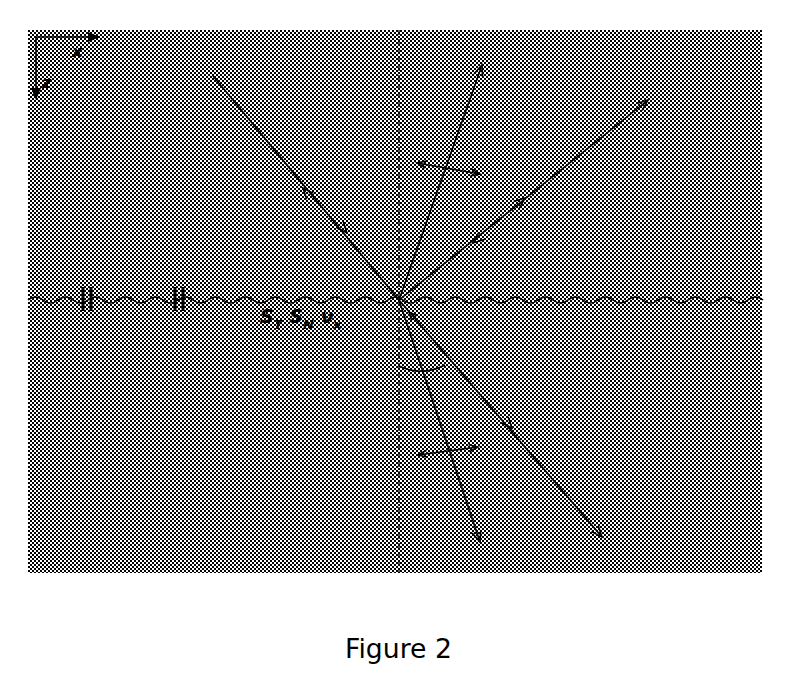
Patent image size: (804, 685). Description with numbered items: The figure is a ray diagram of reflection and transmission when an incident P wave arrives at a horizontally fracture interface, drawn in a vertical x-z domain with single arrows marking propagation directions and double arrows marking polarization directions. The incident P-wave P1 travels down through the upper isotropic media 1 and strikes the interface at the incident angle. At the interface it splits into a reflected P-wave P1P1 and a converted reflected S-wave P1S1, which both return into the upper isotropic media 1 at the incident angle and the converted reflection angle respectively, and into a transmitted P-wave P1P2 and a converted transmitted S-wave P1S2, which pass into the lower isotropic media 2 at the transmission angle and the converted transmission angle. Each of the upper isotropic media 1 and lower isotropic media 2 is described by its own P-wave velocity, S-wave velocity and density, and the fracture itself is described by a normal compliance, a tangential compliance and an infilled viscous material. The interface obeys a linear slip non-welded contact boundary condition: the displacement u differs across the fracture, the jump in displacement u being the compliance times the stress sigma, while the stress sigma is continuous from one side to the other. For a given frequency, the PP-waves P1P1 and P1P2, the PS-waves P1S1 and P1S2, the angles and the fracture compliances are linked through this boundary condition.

The incident P-wave P1 is at (286, 188).
The converted reflected S-wave P1S1 is at (468, 182).
The reflected P-wave P1P1 is at (542, 200).
The converted transmitted S-wave P1S2 is at (466, 421).
The transmitted P-wave P1P2 is at (519, 418).
The displacement u is at (87, 297).
The stress sigma is at (180, 297).
The upper isotropic media 1 is at (524, 249).
The lower isotropic media 2 is at (542, 362).